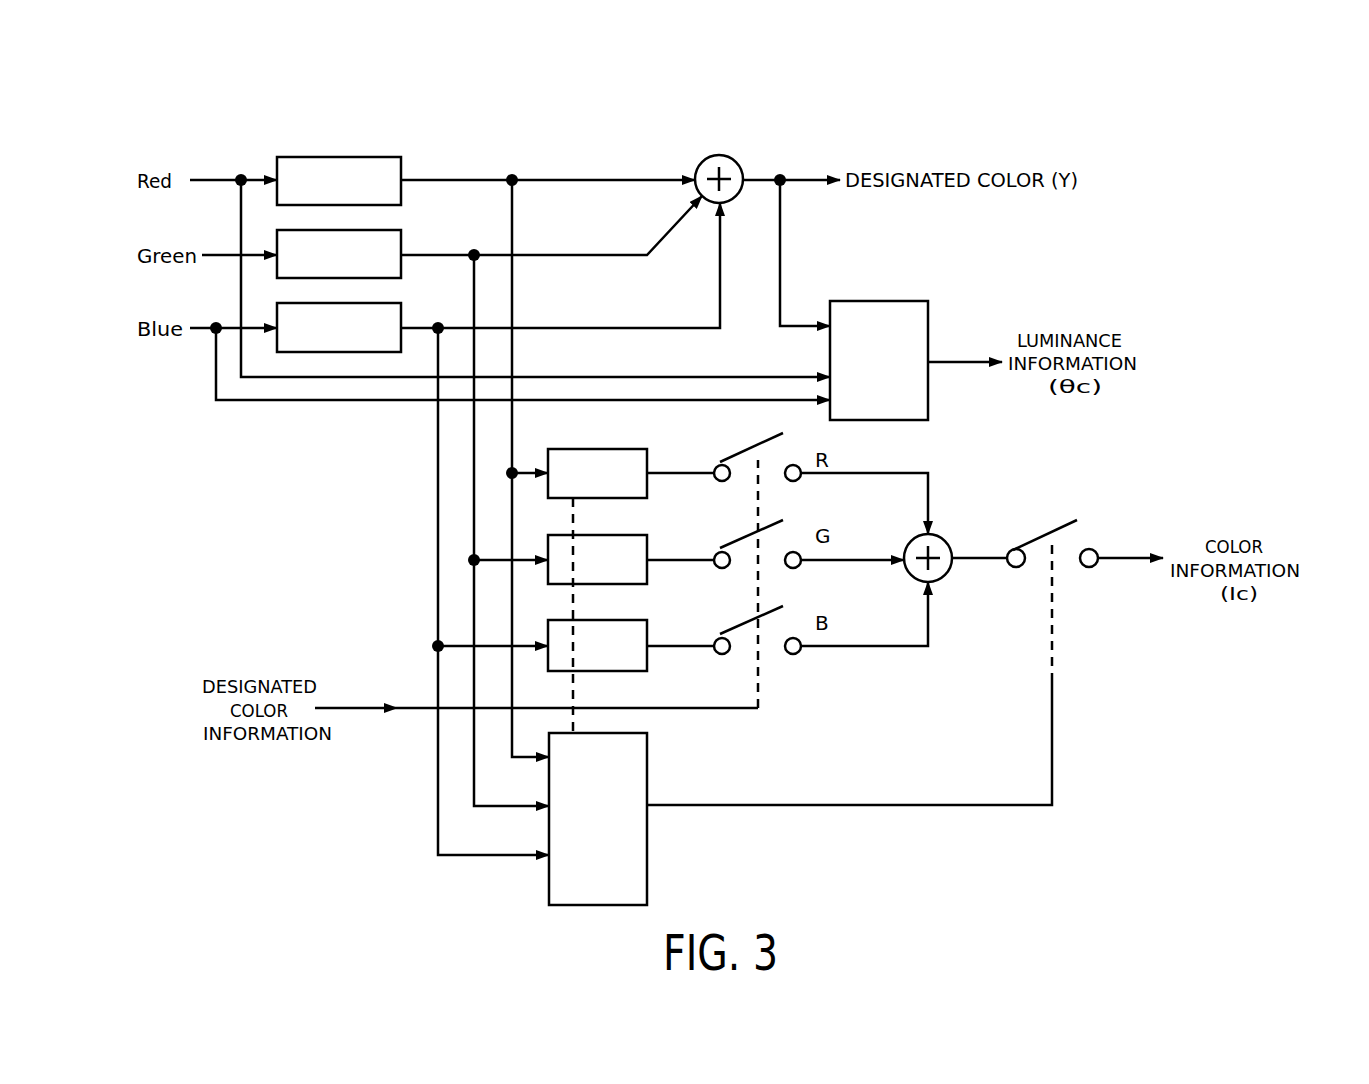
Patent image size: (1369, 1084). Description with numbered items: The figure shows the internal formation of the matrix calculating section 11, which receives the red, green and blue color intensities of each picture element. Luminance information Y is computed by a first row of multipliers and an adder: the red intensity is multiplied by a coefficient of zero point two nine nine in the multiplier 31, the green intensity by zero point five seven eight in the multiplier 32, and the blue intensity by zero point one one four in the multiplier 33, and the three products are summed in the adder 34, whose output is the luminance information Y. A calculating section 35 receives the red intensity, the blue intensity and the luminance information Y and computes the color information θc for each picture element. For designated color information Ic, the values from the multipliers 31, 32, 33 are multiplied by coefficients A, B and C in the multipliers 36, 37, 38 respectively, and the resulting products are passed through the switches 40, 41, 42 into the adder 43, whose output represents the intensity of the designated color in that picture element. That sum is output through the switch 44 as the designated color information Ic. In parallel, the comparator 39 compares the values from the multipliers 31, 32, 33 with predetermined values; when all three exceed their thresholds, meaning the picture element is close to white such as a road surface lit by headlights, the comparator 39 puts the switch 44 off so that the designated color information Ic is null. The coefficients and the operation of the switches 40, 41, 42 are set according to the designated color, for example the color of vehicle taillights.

The matrix calculating section 11 is at (1153, 225).
The multiplier 31 is at (390, 156).
The multiplier 32 is at (390, 229).
The multiplier 33 is at (390, 302).
The adder 34 is at (726, 154).
The calculating section 35 is at (900, 300).
The multiplier 36 is at (617, 448).
The multiplier 37 is at (632, 534).
The multiplier 38 is at (635, 672).
The comparator 39 is at (648, 755).
The switch 40 is at (767, 435).
The switch 41 is at (751, 532).
The switch 42 is at (735, 620).
The adder 43 is at (946, 573).
The switch 44 is at (1047, 532).